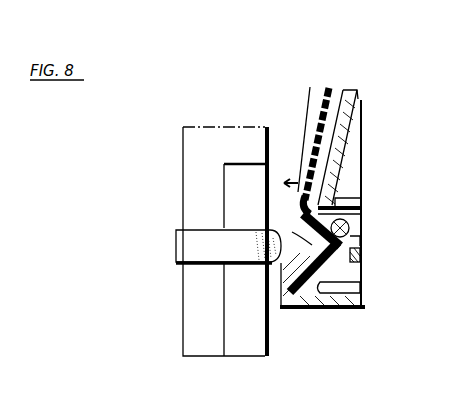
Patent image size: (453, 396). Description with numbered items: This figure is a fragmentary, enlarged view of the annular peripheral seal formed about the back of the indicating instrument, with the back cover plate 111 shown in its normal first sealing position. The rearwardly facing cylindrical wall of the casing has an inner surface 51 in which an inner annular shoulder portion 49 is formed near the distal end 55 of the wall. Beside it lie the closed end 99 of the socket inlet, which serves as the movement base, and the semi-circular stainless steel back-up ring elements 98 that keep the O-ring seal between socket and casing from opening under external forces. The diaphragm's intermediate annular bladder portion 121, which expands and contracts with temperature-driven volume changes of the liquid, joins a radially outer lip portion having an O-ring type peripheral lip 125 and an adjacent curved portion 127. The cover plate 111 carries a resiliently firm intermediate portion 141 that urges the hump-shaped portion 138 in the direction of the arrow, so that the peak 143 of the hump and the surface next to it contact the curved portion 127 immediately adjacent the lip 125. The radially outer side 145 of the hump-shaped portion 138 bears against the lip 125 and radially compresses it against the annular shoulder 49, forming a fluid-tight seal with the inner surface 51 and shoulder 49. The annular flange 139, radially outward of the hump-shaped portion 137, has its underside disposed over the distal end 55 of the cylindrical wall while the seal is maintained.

The closed end of the socket inlet 99 is at (198, 137).
The semi-circular stainless steel back-up ring elements 98 is at (180, 248).
The inner annular shoulder portion 49 is at (292, 261).
The intermediate annular bladder portion 121 is at (330, 87).
The back cover plate 111 is at (353, 90).
The resiliently firm intermediate portion 141 is at (348, 124).
The peak of the hump 143 is at (300, 200).
The curved portion 127 is at (302, 210).
The inner surface of the cylindrical wall 51 is at (296, 230).
The hump-shaped portion 137 is at (347, 200).
The annular ridge or hump-shaped portion 138 is at (356, 210).
The radially outer side of the hump-shaped portion 145 is at (352, 229).
The annular flange 139 is at (356, 240).
The peripheral lip 125 is at (354, 246).
The distal end of the cylindrical wall 55 is at (352, 257).